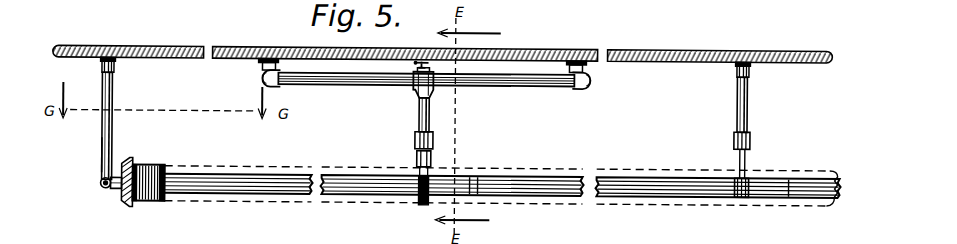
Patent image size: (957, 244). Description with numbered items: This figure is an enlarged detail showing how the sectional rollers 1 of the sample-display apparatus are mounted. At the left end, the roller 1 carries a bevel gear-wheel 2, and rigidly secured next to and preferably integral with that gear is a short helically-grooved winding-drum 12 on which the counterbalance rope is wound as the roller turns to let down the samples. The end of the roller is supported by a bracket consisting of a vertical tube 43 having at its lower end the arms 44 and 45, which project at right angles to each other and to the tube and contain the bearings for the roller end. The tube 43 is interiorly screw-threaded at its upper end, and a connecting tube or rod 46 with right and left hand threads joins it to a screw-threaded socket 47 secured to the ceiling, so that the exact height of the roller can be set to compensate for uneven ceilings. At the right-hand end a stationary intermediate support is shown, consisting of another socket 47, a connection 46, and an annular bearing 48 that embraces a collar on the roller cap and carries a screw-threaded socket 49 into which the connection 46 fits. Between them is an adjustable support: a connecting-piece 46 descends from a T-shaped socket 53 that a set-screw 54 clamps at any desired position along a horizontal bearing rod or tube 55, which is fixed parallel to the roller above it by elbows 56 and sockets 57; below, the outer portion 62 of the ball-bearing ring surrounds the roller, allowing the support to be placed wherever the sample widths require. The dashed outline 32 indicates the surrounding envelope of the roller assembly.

The roller 1 is at (270, 191).
The bevel gear-wheel 2 is at (131, 204).
The helically-grooved winding-drum 12 is at (150, 162).
The casing (dashed) 32 is at (294, 195).
The vertical tube 43 is at (97, 159).
The arm 44 is at (113, 190).
The arm 45 is at (101, 188).
The connecting tube or rod 46 is at (112, 102).
The screw-threaded socket 47 is at (115, 71).
The annular bearing 48 is at (739, 176).
The screw-threaded socket 49 is at (738, 146).
The T-shaped socket 53 is at (433, 93).
The set-screw 54 is at (428, 65).
The horizontal bearing rod or tube 55 is at (380, 84).
The elbow 56 is at (266, 81).
The socket 57 is at (260, 64).
The outer portion of ring 62 is at (431, 170).